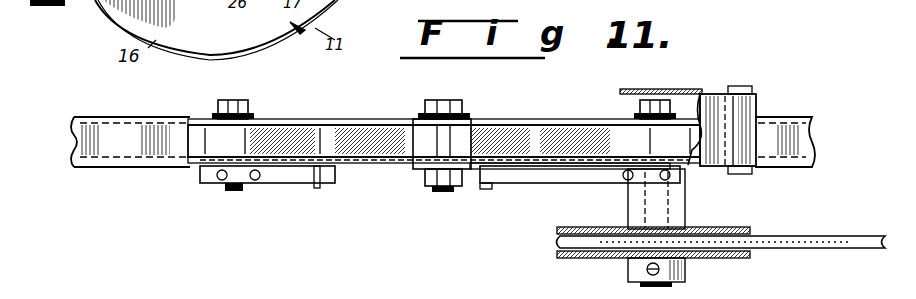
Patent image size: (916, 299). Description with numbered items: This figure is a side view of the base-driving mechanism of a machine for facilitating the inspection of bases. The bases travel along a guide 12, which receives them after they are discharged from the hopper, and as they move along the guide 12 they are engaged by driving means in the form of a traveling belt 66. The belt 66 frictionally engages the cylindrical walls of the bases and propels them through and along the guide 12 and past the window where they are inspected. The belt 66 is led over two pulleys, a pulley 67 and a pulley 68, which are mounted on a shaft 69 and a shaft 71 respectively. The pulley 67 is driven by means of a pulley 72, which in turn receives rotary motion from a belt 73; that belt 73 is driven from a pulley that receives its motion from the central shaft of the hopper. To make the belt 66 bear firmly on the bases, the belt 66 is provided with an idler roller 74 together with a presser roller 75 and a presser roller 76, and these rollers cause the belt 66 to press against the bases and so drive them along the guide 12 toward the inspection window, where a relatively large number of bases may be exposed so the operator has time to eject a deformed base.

The guide 12 is at (142, 171).
The traveling belt 66 is at (400, 145).
The pulley 67 is at (278, 128).
The pulley 68 is at (606, 125).
The shaft 69 is at (230, 100).
The shaft 71 is at (663, 92).
The pulley 72 is at (735, 236).
The belt 73 is at (806, 238).
The idler roller 74 is at (455, 142).
The presser roller 75 is at (332, 125).
The presser roller 76 is at (556, 138).